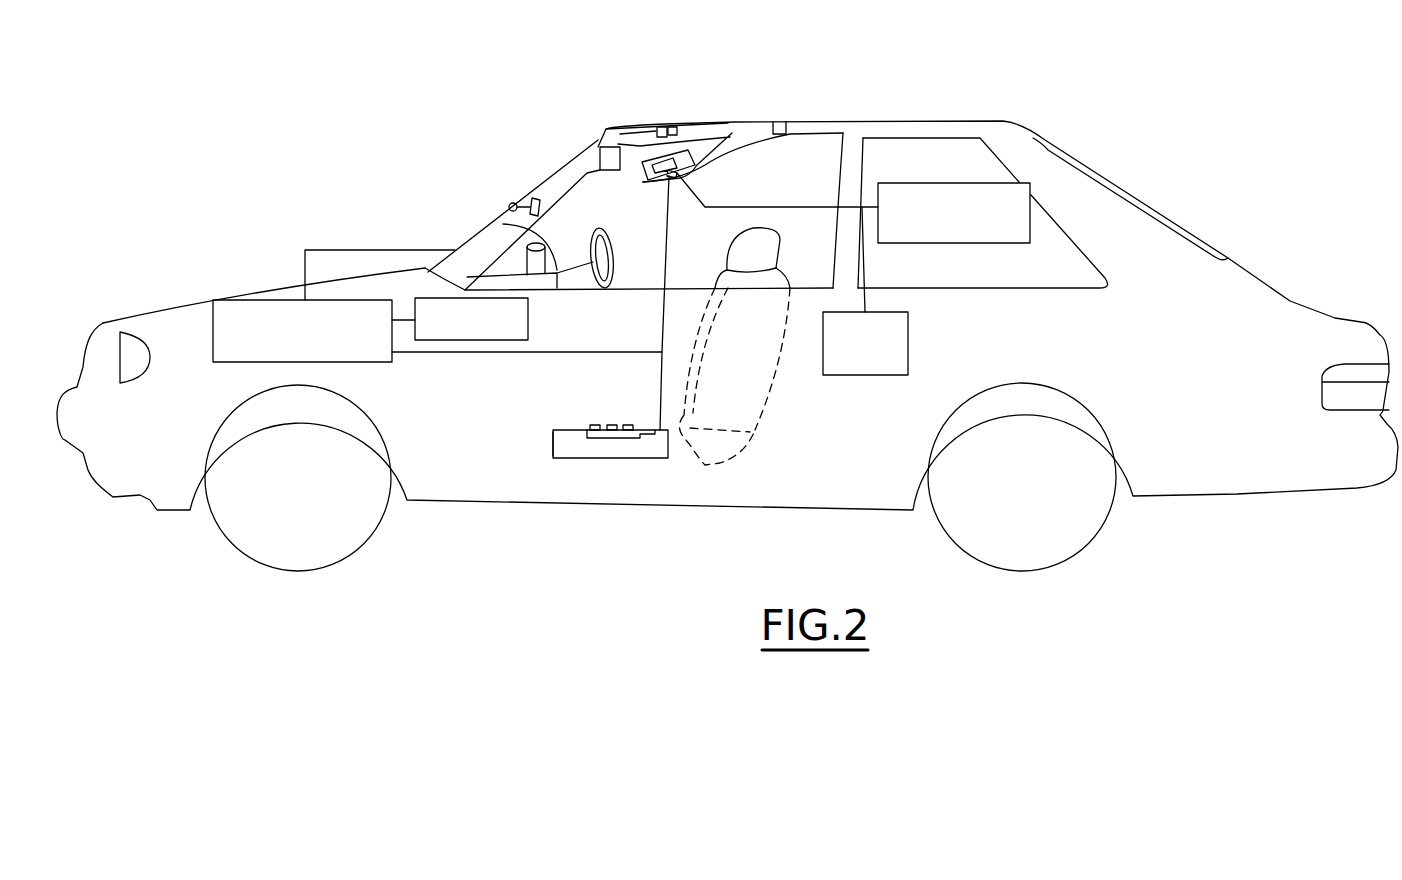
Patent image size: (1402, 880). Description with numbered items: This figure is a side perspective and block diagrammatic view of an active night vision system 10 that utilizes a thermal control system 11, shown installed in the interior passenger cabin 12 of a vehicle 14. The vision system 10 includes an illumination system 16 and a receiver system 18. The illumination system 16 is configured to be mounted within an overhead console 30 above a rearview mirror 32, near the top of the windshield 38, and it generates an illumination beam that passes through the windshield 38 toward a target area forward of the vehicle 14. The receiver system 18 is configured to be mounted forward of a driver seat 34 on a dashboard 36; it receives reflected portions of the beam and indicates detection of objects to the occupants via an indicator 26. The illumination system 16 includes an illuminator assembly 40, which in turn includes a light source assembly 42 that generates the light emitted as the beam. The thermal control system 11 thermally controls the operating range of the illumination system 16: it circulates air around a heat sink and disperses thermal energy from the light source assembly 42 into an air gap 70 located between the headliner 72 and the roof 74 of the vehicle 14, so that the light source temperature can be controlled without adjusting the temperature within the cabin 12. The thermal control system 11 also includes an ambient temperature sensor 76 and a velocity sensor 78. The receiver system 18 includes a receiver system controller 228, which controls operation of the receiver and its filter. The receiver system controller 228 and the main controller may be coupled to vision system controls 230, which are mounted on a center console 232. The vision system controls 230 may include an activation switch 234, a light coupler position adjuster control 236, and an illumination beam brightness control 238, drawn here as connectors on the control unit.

The active night vision system 10 is at (553, 82).
The thermal control system 11 is at (950, 299).
The interior passenger cabin 12 is at (758, 496).
The vehicle 14 is at (912, 120).
The illumination system 16 is at (746, 157).
The receiver system 18 is at (368, 235).
The indicator 26 is at (530, 323).
The overhead console 30 is at (757, 140).
The rearview mirror 32 is at (545, 208).
The driver seat 34 is at (783, 275).
The dashboard 36 is at (508, 208).
The windshield 38 is at (497, 208).
The illuminator assembly 40 is at (682, 125).
The light source assembly 42 is at (598, 132).
The air gap 70 is at (947, 132).
The headliner 72 is at (907, 138).
The roof 74 is at (805, 122).
The ambient temperature sensor 76 is at (955, 243).
The velocity sensor 78 is at (877, 378).
The receiver system controller 228 is at (268, 300).
The vision system controls 230 is at (608, 459).
The center console 232 is at (552, 443).
The activation switch 234 is at (595, 424).
The light coupler position adjuster control 236 is at (612, 425).
The illumination beam brightness control 238 is at (627, 425).